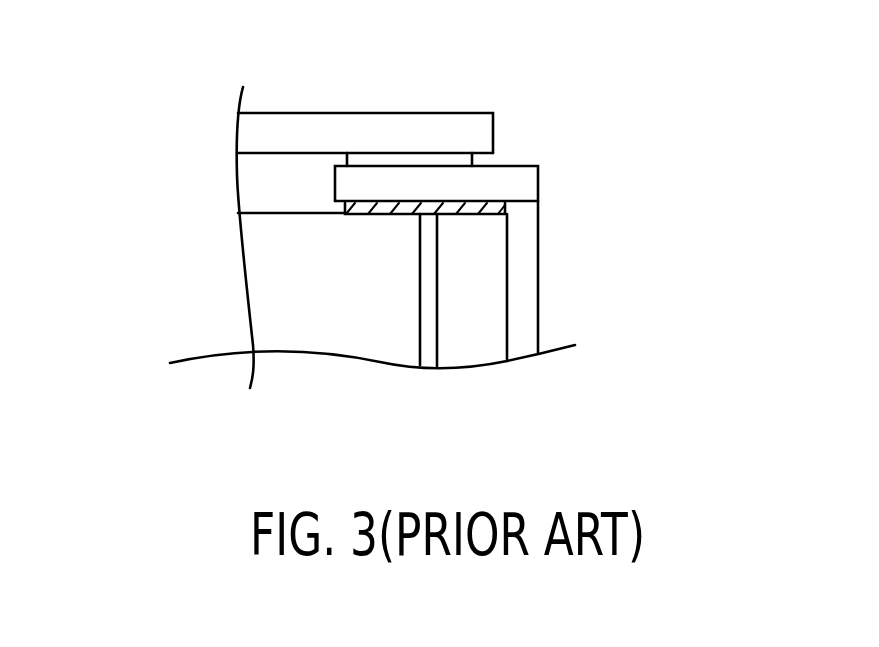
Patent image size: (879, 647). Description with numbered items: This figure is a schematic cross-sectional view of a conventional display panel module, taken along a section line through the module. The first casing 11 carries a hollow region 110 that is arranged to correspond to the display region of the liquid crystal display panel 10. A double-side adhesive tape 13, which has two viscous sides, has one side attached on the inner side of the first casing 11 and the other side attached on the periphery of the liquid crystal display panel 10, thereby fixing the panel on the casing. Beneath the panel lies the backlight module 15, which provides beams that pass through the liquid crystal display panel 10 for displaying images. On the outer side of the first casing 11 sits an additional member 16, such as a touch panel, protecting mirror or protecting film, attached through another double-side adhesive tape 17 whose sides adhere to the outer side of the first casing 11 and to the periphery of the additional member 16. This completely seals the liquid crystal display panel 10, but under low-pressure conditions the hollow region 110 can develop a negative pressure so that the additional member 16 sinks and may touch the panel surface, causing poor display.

The liquid crystal display panel 10 is at (288, 291).
The hollow region 110 is at (277, 182).
The first casing 11 is at (523, 185).
The double-side adhesive tape 13 is at (505, 208).
The backlight module 15 is at (472, 337).
The additional member 16 is at (337, 130).
The double-side adhesive tape 17 is at (411, 153).